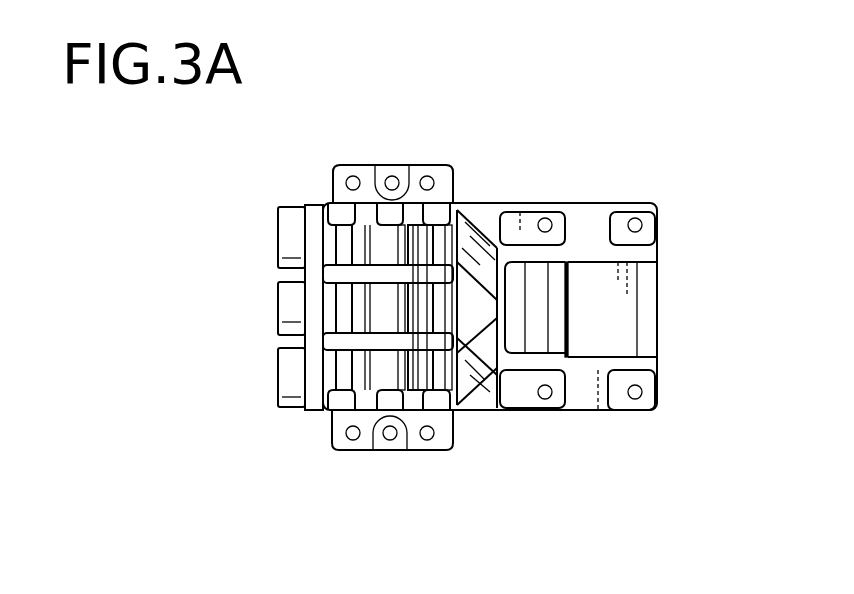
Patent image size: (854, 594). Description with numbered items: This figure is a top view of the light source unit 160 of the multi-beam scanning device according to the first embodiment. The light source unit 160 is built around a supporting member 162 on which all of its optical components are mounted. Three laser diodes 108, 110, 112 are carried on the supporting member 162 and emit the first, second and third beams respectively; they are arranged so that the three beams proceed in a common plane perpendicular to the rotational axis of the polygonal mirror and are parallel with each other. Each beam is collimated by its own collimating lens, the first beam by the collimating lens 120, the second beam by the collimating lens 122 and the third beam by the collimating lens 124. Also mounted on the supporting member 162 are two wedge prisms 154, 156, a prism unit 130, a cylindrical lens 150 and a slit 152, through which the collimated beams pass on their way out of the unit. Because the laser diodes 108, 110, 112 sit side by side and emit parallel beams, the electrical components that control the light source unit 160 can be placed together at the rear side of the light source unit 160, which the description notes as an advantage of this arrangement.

The laser diode 108 is at (278, 232).
The laser diode 110 is at (278, 382).
The laser diode 112 is at (278, 323).
The collimating lens 120 is at (345, 240).
The collimating lens 122 is at (353, 372).
The collimating lens 124 is at (352, 310).
The prism unit 130 is at (470, 236).
The cylindrical lens 150 is at (532, 362).
The slit 152 is at (555, 317).
The wedge prism 154 is at (407, 430).
The wedge prism 156 is at (420, 300).
The light source unit 160 is at (623, 160).
The supporting member 162 is at (595, 222).